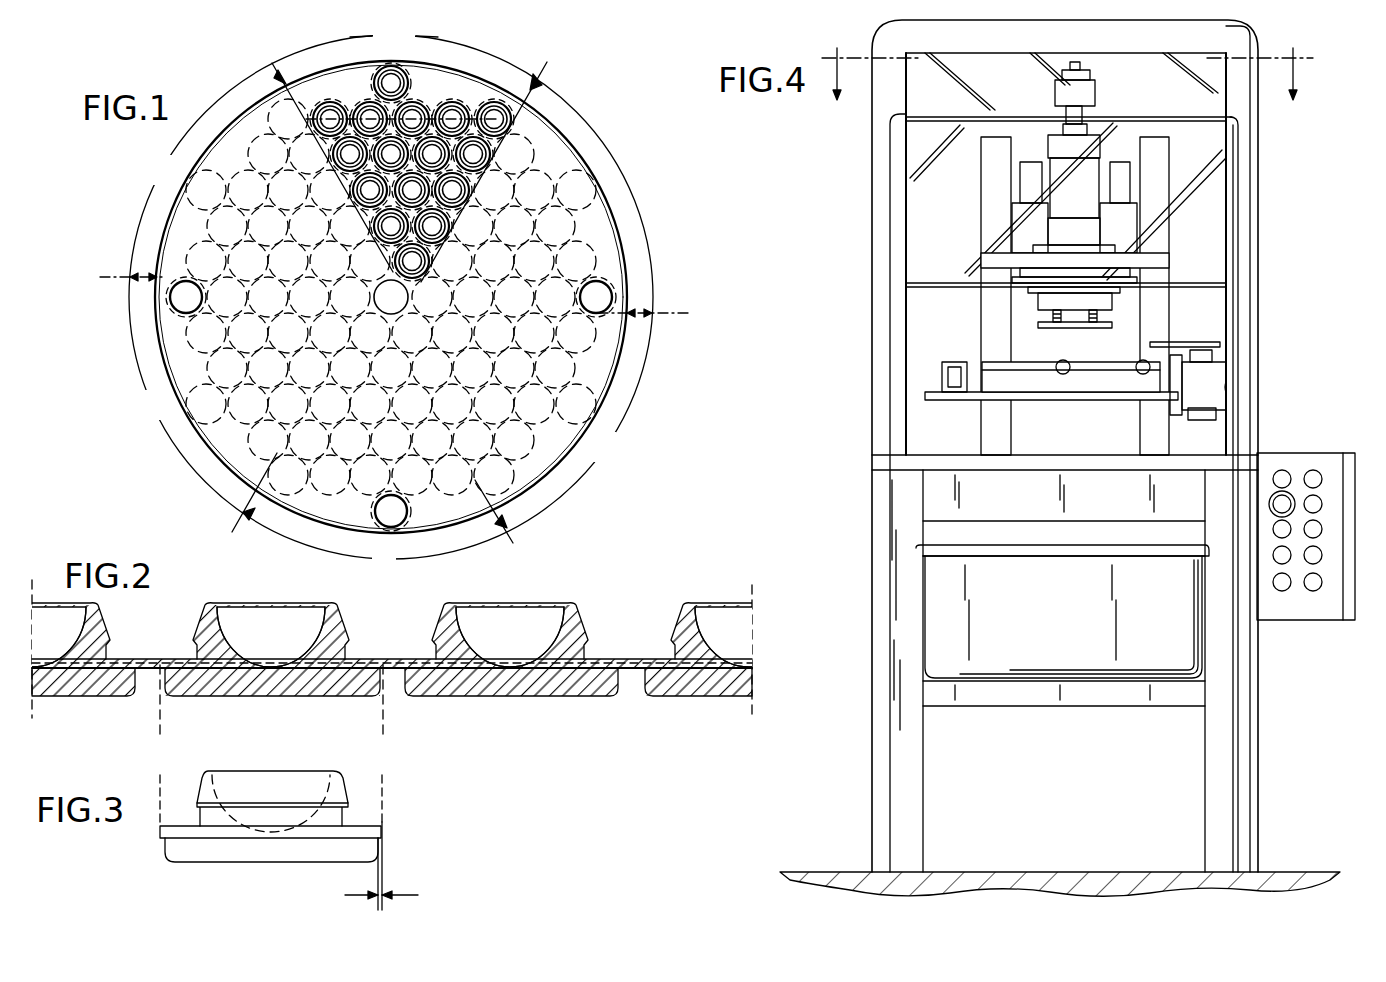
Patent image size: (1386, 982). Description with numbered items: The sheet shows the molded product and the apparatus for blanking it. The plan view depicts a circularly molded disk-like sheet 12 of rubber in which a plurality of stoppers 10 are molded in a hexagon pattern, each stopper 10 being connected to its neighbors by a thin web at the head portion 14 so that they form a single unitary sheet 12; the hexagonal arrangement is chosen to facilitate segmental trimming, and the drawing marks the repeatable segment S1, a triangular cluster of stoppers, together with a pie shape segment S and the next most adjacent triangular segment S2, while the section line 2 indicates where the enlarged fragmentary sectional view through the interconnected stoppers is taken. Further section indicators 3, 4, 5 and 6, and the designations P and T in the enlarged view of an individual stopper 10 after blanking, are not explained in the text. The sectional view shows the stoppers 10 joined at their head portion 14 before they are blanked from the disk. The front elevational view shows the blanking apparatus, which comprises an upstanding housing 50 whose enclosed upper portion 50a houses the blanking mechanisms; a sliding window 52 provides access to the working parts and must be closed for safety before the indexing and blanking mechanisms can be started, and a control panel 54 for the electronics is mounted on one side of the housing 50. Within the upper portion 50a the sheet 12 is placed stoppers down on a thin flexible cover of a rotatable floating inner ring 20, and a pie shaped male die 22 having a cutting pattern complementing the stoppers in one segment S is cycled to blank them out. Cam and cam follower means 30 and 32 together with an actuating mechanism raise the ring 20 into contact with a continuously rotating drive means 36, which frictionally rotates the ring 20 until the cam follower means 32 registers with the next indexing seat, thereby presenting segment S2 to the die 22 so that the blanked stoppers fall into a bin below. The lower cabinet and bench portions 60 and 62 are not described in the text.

In FIG. 1, the section line 2— 2 is at (330, 119).
In FIG. 1, the section line 3 is at (516, 260).
In FIG. 1, the section line 4 is at (444, 522).
In FIG. 1, the section line 5- 5 is at (212, 462).
In FIG. 4, the section line 5- 5 is at (1067, 63).
In FIG. 1, the section line 6 is at (273, 167).
In FIG. 3, the stopper 10 is at (287, 855).
In FIG. 1, the sheet 12 is at (612, 236).
In FIG. 2, the head portion 14 is at (338, 688).
In FIG. 4, the inner ring 20 is at (982, 363).
In FIG. 4, the male die 22 is at (1115, 303).
In FIG. 4, the cam means 30 is at (1058, 362).
In FIG. 4, the cam follower means 32 is at (945, 366).
In FIG. 4, the drive means 36 is at (1220, 343).
In FIG. 4, the housing 50 is at (871, 392).
In FIG. 4, the upper portion 50a is at (918, 97).
In FIG. 4, the sliding window 52 is at (1203, 230).
In FIG. 4, the control panel 54 is at (1306, 462).
In FIG. 4, the cabinet 60 is at (882, 543).
In FIG. 4, the bench top 62 is at (878, 462).
In FIG. 1, the segment S is at (624, 357).
In FIG. 1, the repeatable segment S1 is at (398, 53).
In FIG. 1, the next adjacent triangular segment S2 is at (603, 150).
In FIG. 3, the pocket P is at (347, 783).
In FIG. 3, the tray bottom T is at (178, 862).